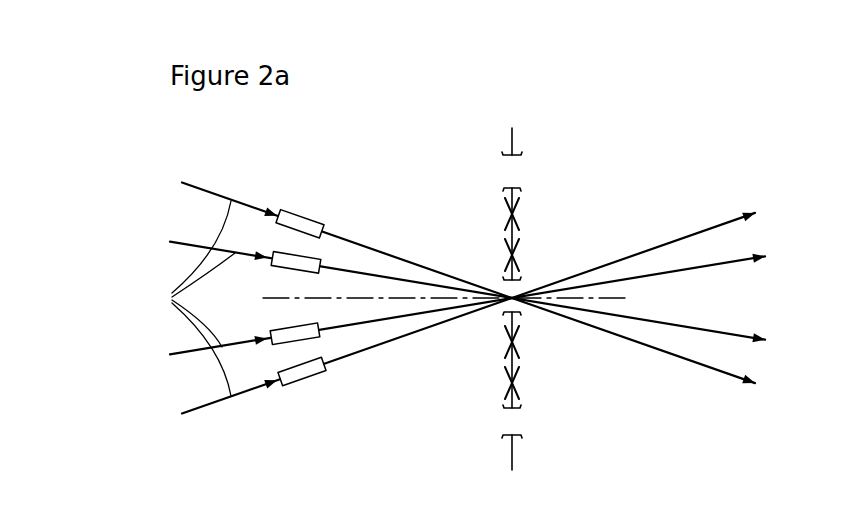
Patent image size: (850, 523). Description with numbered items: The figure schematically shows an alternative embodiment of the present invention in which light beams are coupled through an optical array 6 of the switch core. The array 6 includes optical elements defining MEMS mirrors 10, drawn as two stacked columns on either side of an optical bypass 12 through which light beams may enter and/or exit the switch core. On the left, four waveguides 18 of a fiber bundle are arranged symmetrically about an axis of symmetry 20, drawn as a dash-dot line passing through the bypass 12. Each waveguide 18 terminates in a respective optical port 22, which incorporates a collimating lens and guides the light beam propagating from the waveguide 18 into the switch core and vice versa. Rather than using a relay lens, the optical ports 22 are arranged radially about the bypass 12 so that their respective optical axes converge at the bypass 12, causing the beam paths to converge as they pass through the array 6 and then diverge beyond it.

The array 6 is at (513, 142).
The MEMS mirror 10 is at (516, 213).
The optical bypass 12 is at (500, 311).
The waveguide 18 is at (191, 298).
The axis of symmetry 20 is at (275, 300).
The optical port 22 is at (296, 252).